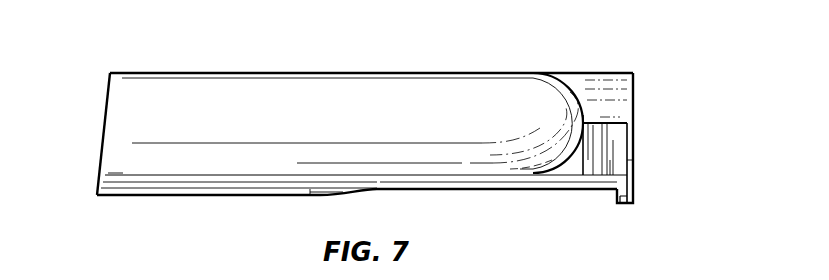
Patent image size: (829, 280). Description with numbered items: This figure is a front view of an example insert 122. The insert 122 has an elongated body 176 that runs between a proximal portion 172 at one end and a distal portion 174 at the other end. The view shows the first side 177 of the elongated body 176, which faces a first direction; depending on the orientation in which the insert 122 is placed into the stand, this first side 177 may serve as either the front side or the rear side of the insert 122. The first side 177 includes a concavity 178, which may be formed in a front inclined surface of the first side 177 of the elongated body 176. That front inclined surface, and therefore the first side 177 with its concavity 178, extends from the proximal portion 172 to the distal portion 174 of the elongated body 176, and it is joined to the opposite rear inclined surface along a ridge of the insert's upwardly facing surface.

The distal portion 174 is at (122, 71).
The elongated body 176 is at (362, 71).
The first side 177 is at (588, 68).
The proximal portion 172 is at (630, 71).
The insert 122 is at (619, 107).
The concavity 178 is at (278, 133).